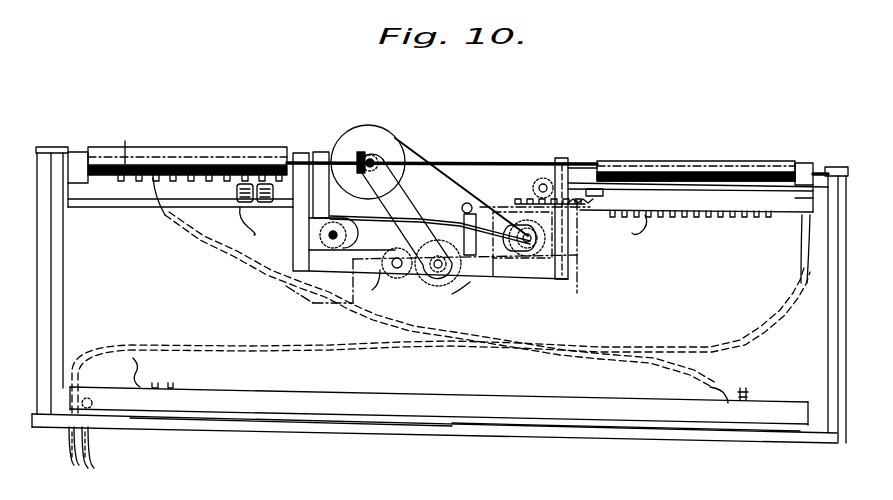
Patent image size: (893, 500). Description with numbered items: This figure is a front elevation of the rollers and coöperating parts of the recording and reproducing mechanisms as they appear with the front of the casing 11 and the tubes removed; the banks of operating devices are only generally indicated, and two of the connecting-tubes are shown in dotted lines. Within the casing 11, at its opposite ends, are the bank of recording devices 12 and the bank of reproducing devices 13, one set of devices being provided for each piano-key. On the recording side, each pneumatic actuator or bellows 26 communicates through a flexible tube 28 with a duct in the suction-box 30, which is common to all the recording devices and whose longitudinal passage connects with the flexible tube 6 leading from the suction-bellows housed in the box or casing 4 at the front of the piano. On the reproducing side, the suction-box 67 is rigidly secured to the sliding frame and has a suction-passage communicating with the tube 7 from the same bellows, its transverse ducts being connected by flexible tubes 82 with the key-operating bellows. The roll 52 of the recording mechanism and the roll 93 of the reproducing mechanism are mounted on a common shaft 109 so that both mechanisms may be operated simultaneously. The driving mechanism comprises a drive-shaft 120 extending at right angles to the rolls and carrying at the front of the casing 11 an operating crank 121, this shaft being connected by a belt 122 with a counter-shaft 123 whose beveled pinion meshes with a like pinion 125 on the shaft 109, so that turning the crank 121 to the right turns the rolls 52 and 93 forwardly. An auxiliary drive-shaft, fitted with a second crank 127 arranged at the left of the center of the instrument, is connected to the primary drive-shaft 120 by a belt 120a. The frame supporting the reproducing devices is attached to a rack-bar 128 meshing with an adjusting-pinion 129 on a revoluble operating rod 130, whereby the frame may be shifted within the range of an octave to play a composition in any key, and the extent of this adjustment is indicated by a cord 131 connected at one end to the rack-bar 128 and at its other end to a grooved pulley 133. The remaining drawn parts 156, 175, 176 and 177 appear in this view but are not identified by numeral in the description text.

The box or casing 4 is at (319, 293).
The flexible tube 6 is at (92, 448).
The flexible tube 7 is at (803, 253).
The casing 11 is at (51, 310).
The bank of recording devices 12 is at (180, 179).
The bank of reproducing devices 13 is at (712, 216).
The spring-expanded bellows or pneumatic actuator 26 is at (116, 144).
The flexible tube 28 is at (157, 211).
The suction-box 30 is at (450, 388).
The roll 52 is at (233, 145).
The suction-box 67 is at (752, 200).
The flexible tube 82 is at (497, 239).
The roll 93 is at (683, 163).
The common shaft 109 is at (553, 165).
The drive-shaft 120 is at (537, 239).
The belt 120a is at (446, 207).
The operating crank or handle 121 is at (299, 239).
The belt 122 is at (437, 160).
The counter-shaft 123 is at (390, 144).
The beveled pinion 125 is at (357, 143).
The operating crank or handle 127 is at (377, 143).
The rack-bar 128 is at (537, 186).
The adjusting-pinion 129 is at (617, 226).
The revoluble operating rod or stem 130 is at (558, 178).
The cord 131 is at (460, 206).
The grooved pulley 133 is at (470, 292).
The pulley 156 is at (342, 233).
The pulley rim 175 is at (446, 276).
The pulley 176 is at (436, 282).
The pulley 177 is at (394, 271).